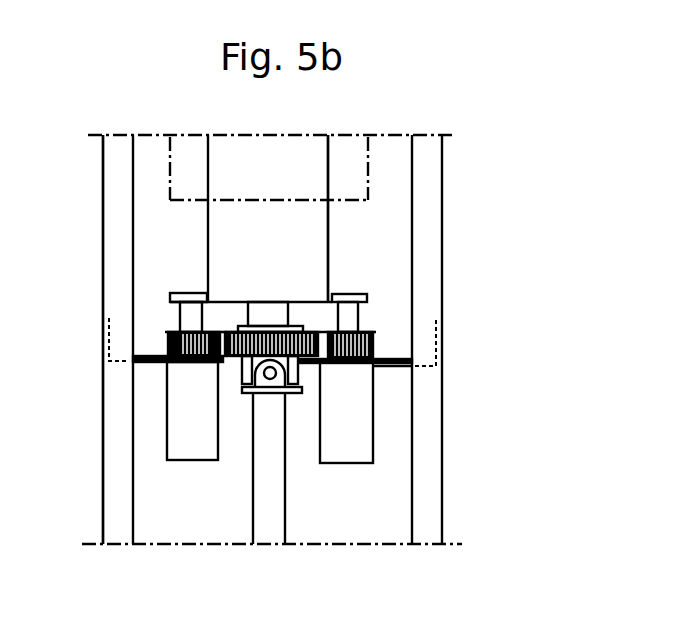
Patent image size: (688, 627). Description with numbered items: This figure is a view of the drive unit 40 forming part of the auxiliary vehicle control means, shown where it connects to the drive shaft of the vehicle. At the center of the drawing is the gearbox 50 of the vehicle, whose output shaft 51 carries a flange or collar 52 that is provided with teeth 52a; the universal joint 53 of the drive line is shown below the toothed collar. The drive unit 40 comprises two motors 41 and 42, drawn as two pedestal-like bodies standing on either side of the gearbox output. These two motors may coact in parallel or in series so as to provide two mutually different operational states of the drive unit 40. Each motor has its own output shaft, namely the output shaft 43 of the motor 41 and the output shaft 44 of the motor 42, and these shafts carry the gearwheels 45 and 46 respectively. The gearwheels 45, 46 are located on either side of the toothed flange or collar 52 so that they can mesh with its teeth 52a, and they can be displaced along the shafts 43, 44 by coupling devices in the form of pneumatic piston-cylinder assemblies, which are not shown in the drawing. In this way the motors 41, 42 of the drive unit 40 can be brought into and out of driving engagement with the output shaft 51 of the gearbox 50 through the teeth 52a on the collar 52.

The drive unit 40 is at (140, 306).
The motor 41 is at (186, 390).
The motor 42 is at (358, 406).
The output shaft 43 is at (190, 315).
The output shaft 44 is at (365, 315).
The gearwheel 45 is at (165, 343).
The gearwheel 46 is at (373, 348).
The gearbox 50 is at (313, 233).
The output shaft 51 is at (308, 328).
The flange or collar 52 is at (350, 310).
The teeth 52a is at (255, 300).
The universal joint 53 is at (288, 395).